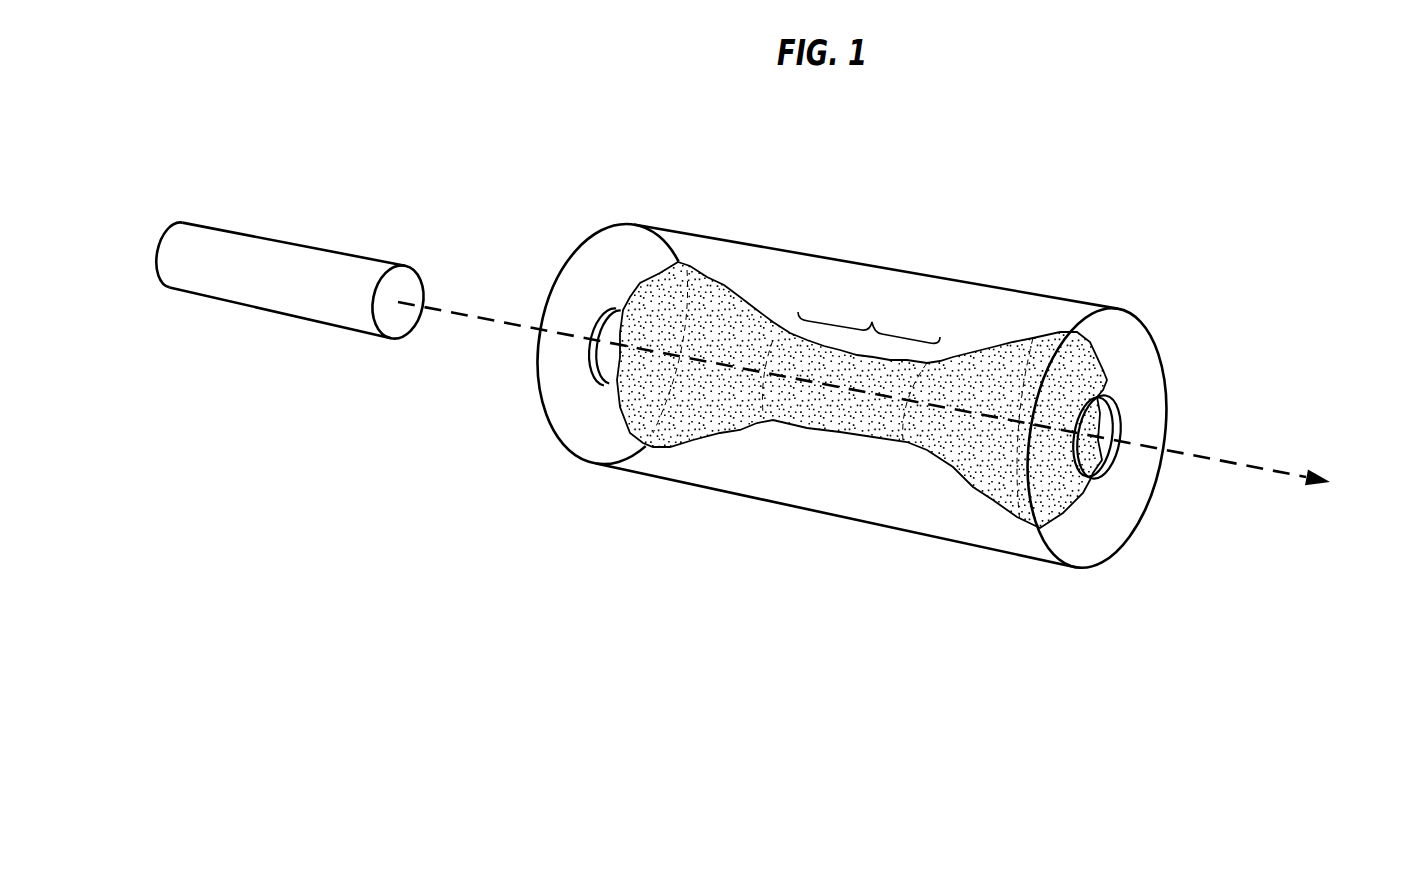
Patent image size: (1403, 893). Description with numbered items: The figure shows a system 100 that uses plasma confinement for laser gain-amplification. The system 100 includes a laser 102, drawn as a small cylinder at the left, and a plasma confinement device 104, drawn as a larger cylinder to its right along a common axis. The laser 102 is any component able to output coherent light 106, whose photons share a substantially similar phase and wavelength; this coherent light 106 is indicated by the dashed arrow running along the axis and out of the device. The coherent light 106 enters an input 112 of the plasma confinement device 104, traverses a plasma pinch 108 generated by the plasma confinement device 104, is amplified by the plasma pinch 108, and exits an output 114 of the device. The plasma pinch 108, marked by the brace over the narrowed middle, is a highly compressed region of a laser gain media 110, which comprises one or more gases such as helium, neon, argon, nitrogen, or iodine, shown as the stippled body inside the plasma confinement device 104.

The system 100 is at (1238, 161).
The laser 102 is at (298, 257).
The plasma confinement device 104 is at (1031, 291).
The coherent light 106 is at (1268, 471).
The plasma pinch 108 is at (869, 314).
The laser gain media 110 is at (728, 407).
The input 112 is at (600, 327).
The output 114 is at (1118, 430).